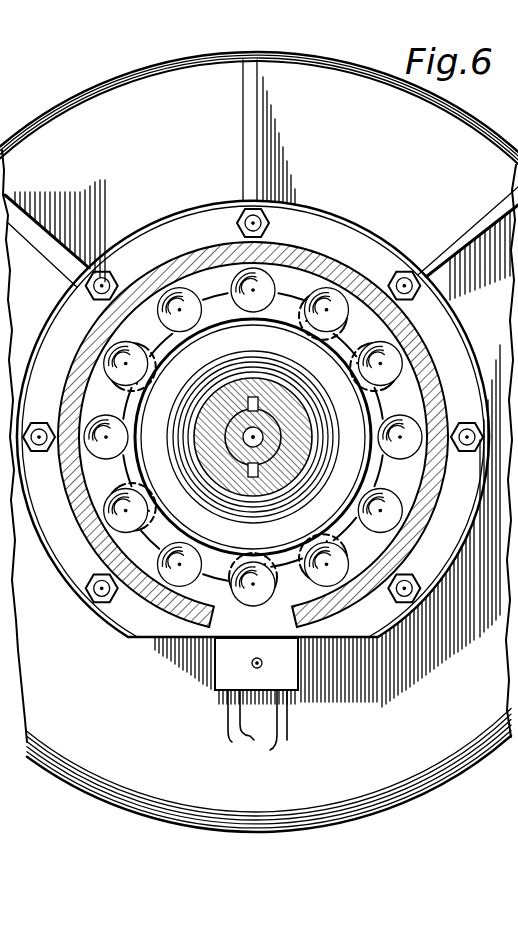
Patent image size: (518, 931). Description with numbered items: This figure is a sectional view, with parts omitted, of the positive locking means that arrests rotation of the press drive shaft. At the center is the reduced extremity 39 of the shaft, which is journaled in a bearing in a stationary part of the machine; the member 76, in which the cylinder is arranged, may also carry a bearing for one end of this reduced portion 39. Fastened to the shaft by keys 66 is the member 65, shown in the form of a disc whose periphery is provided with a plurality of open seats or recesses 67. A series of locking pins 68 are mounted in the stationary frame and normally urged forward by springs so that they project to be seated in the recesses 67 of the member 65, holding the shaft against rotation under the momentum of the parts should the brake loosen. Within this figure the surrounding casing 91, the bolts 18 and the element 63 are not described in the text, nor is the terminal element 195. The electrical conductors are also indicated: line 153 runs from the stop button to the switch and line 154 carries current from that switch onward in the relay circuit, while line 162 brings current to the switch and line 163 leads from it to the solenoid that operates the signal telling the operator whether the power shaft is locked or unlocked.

The casing 91 is at (338, 84).
The member 76 is at (300, 247).
The bolts 18 is at (240, 228).
The locking pins 68 is at (270, 293).
The open seats or recesses 67 is at (197, 352).
The keys 66 is at (253, 395).
The reduced extremity 39 is at (255, 435).
The member 65 is at (143, 467).
The hub disc 63 is at (222, 462).
The terminal screw 195 is at (254, 667).
The line 163 is at (228, 722).
The line 162 is at (240, 727).
The line 153 is at (285, 732).
The line 154 is at (290, 724).